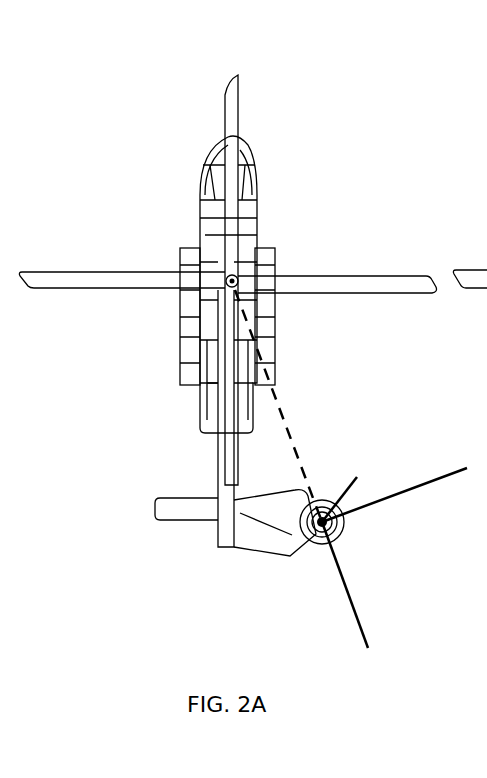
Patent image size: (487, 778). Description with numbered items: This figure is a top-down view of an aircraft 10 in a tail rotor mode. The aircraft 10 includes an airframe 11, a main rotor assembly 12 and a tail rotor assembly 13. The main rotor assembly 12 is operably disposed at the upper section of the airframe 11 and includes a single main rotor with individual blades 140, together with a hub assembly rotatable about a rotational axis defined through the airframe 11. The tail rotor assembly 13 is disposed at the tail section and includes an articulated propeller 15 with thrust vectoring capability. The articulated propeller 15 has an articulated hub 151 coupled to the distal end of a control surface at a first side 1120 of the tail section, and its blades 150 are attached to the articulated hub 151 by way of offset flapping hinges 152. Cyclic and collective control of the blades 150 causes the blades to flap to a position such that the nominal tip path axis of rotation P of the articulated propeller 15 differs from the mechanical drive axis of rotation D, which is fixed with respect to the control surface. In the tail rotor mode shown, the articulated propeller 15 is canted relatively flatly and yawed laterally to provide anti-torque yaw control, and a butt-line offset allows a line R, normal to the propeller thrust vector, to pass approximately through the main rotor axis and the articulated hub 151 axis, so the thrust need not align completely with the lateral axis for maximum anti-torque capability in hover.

The aircraft 10 is at (172, 184).
The airframe 11 is at (210, 247).
The main rotor assembly 12 is at (177, 318).
The blades 140 is at (353, 280).
The first side 1120 is at (265, 378).
The tail rotor assembly 13 is at (298, 542).
The blades 150 is at (302, 498).
The articulated hub 151 is at (322, 522).
The offset flapping hinges 152 is at (322, 522).
The articulated propeller 15 is at (337, 547).
The mechanical drive axis of rotation D is at (348, 488).
The tip path axis of rotation P is at (404, 488).
The line normal to thrust vector R is at (352, 610).